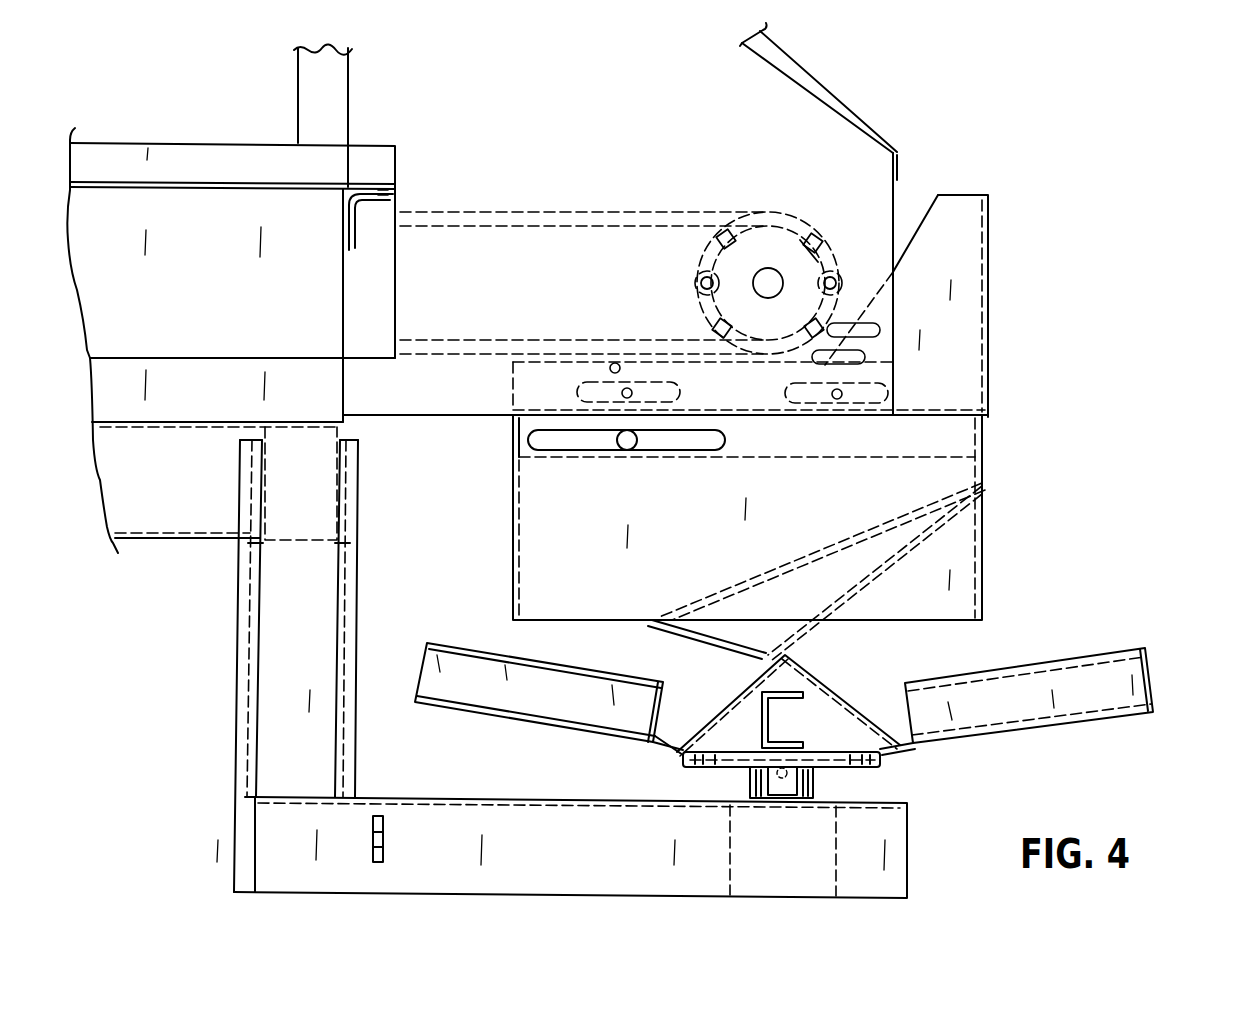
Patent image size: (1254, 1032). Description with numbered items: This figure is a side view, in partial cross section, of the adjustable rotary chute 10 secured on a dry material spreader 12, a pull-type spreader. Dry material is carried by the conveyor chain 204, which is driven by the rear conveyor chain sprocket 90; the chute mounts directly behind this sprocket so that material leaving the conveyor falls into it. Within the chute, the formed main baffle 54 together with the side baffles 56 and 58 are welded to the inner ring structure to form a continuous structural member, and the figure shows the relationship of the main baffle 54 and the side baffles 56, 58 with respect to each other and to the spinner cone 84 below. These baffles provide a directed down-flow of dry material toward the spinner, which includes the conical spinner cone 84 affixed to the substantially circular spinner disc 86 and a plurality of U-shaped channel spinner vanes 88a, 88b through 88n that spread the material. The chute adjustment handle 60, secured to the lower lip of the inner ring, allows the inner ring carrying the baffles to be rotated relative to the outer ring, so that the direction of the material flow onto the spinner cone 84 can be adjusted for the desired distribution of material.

The adjustable rotary chute 10 is at (1090, 437).
The dry material spreader 12 is at (1098, 177).
The conveyor chain 204 is at (643, 212).
The rear conveyor chain sprocket 90 is at (802, 253).
The chute adjustment handle 60 is at (747, 517).
The side baffle 58 is at (760, 575).
The side baffle 56 is at (688, 603).
The main baffle 54 is at (900, 548).
The spinner cone 84 is at (803, 672).
The spinner disc 86 is at (873, 768).
The spinner vane 88a is at (594, 707).
The spinner vane 88b is at (772, 719).
The spinner vane 88n is at (1153, 682).